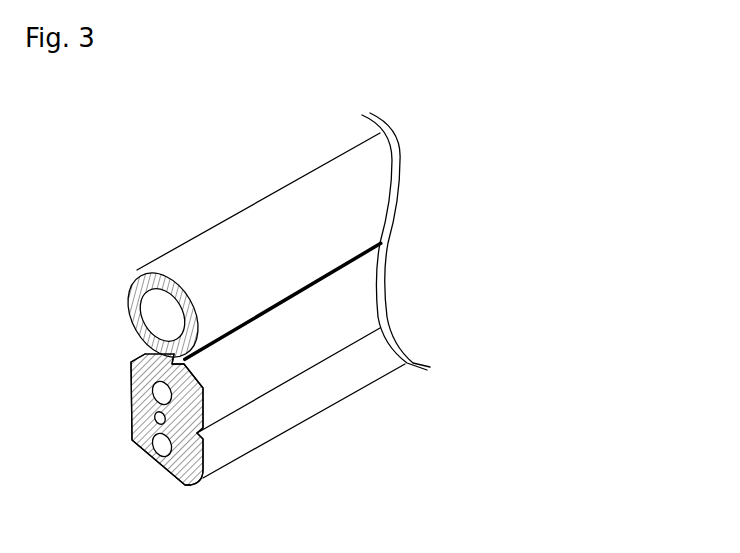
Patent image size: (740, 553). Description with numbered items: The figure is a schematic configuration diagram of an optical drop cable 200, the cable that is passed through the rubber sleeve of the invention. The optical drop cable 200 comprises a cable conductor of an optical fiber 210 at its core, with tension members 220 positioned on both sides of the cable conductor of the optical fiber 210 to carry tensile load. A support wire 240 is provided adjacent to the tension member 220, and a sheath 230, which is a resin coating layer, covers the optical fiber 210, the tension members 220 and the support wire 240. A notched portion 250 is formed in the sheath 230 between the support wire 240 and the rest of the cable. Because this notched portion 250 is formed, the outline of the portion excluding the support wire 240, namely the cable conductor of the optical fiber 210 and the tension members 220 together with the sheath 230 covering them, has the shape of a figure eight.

The optical drop cable 200 is at (267, 460).
The cable conductor of optical fiber 210 is at (155, 416).
The tension members 220 is at (156, 386).
The sheath 230 is at (153, 272).
The support wire 240 is at (158, 318).
The notched portion 250 is at (280, 386).